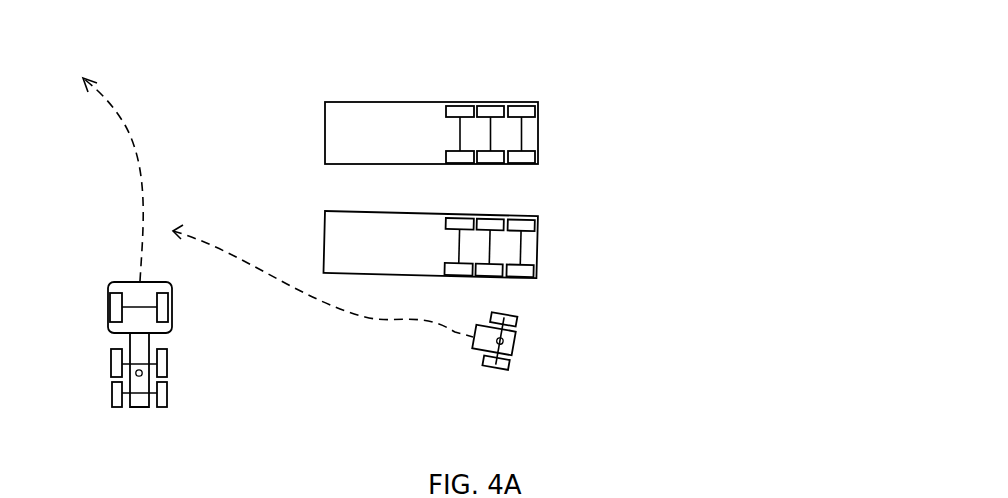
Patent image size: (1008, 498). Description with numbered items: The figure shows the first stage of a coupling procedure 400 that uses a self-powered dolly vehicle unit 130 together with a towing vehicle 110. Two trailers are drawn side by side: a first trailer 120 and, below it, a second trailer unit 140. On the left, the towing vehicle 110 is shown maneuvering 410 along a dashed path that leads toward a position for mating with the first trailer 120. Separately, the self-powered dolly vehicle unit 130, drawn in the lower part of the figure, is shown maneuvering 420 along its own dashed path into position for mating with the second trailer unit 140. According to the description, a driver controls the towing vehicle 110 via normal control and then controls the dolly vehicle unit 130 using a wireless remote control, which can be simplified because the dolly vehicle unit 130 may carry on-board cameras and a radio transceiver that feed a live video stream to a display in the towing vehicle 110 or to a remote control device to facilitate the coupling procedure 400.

The coupling procedure 400 is at (818, 54).
The towing vehicle 110 is at (110, 284).
The first trailer 120 is at (374, 102).
The self-powered dolly vehicle unit 130 is at (474, 349).
The second trailer unit 140 is at (536, 249).
The maneuvering of the towing vehicle 410 is at (113, 169).
The maneuvering of the dolly vehicle unit 420 is at (323, 277).